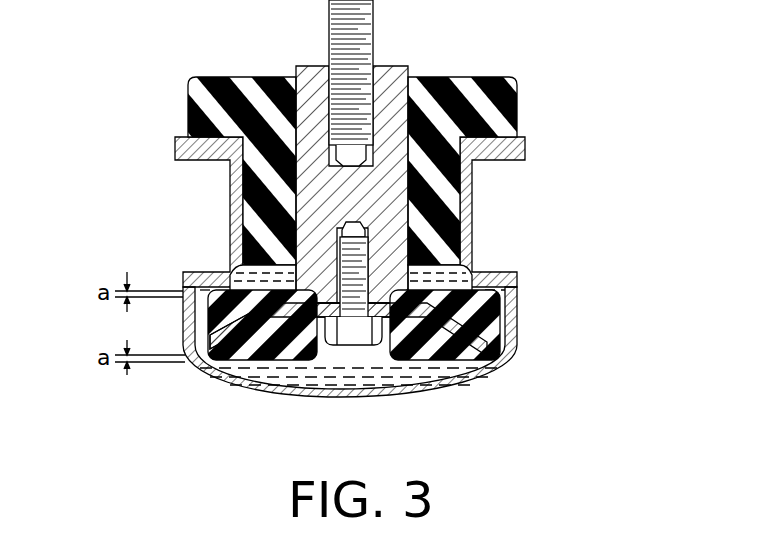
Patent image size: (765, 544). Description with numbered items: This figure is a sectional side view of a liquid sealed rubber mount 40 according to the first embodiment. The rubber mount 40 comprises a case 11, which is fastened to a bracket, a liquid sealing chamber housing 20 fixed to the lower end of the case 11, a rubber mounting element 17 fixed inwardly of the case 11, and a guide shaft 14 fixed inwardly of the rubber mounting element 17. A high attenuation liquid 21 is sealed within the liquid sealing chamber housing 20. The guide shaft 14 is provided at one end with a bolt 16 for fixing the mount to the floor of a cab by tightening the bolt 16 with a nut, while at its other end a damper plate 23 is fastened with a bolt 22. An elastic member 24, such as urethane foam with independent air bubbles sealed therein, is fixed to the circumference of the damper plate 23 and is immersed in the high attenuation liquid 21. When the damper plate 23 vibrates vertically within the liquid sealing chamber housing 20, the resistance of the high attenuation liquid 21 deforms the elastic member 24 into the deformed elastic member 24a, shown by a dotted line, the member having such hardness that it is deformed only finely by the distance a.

The rubber mount 40 is at (560, 82).
The bolt 16 is at (329, 20).
The guide shaft 14 is at (392, 72).
The rubber mounting element 17 is at (500, 124).
The case 11 is at (465, 200).
The liquid sealing chamber housing 20 is at (518, 318).
The deformed elastic member 24a is at (183, 335).
The elastic member 24 is at (255, 340).
The high attenuation liquid 21 is at (317, 368).
The bolt 22 is at (362, 340).
The damper plate 23 is at (457, 340).